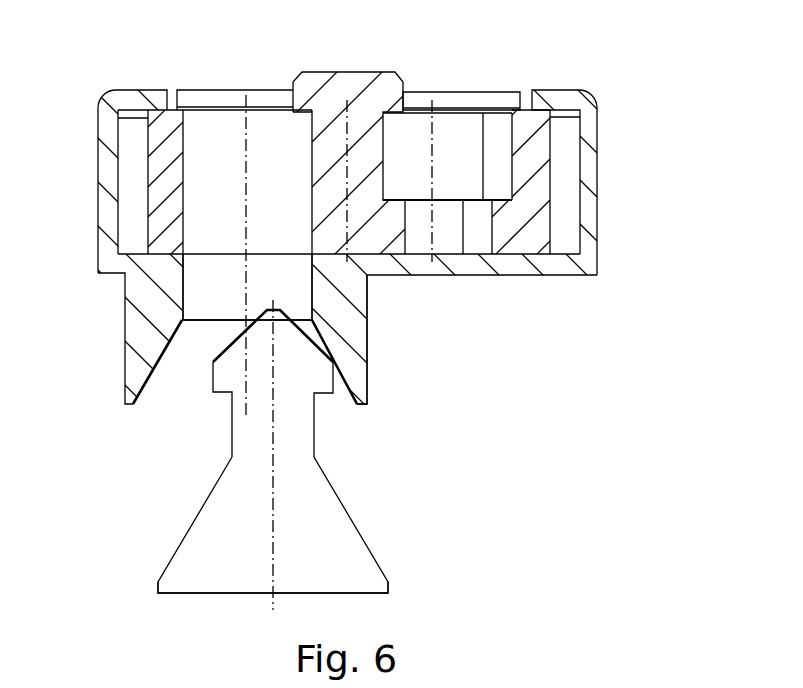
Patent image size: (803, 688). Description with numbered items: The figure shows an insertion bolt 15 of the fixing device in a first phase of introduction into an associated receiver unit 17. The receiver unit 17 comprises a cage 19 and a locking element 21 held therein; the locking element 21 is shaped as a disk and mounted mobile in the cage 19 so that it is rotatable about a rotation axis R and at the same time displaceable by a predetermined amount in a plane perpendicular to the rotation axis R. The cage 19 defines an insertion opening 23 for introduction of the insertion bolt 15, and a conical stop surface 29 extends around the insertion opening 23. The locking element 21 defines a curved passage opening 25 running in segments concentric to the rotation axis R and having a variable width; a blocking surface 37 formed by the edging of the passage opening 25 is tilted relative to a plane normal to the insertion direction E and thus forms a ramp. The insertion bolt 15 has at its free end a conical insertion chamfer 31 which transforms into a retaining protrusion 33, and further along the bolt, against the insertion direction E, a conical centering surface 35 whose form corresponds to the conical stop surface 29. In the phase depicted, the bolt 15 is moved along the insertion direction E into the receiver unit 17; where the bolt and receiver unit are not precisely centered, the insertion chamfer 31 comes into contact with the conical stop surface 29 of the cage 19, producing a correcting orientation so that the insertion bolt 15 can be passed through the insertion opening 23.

The receiver unit 17 is at (103, 73).
The cage 19 is at (593, 150).
The locking element 21 is at (521, 240).
The insertion opening 23 is at (195, 307).
The passage opening 25 is at (221, 246).
The conical stop surface 29 is at (154, 370).
The insertion chamfer 31 is at (225, 348).
The retaining protrusion 33 is at (323, 376).
The insertion bolt 15 is at (342, 541).
The conical centering surface 35 is at (181, 547).
The blocking surface 37 is at (496, 196).
The rotation axis R is at (351, 112).
The insertion direction E is at (521, 388).